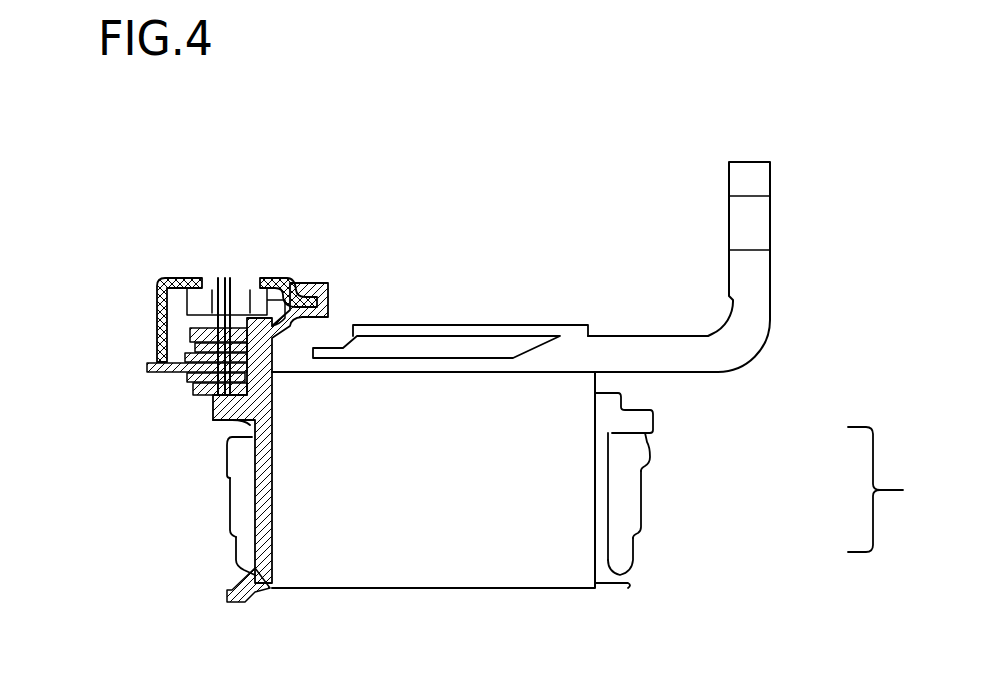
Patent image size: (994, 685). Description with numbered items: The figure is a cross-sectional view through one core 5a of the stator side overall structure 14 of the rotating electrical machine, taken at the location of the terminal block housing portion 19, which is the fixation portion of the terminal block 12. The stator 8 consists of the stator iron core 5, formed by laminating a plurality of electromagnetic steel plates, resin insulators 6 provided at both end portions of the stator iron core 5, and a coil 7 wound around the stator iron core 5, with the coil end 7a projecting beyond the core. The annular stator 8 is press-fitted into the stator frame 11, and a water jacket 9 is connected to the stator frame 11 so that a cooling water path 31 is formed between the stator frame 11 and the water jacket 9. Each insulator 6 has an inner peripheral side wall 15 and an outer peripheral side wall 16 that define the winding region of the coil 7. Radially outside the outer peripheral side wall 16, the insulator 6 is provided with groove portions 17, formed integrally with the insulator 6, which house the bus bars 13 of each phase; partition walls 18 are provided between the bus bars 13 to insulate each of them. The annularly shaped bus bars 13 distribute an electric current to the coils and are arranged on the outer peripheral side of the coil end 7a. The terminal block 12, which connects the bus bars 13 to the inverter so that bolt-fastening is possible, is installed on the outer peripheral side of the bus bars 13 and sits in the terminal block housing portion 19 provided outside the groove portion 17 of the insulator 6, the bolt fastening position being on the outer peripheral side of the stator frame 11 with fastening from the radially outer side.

The stator iron core 5 is at (600, 525).
The core 5a is at (510, 570).
The resin insulator 6 is at (262, 516).
The coil 7 is at (625, 459).
The coil end 7a is at (226, 454).
The stator 8 is at (888, 489).
The water jacket 9 is at (523, 333).
The stator frame 11 is at (750, 282).
The terminal block 12 is at (183, 277).
The bus bars 13 is at (230, 277).
The stator side overall structure 14 is at (628, 232).
The inner peripheral side wall 15 is at (233, 588).
The outer peripheral side wall 16 is at (213, 410).
The groove portion 17 is at (318, 338).
The partition wall 18 is at (187, 380).
The terminal block housing portion 19 is at (307, 293).
The cooling water path 31 is at (455, 345).